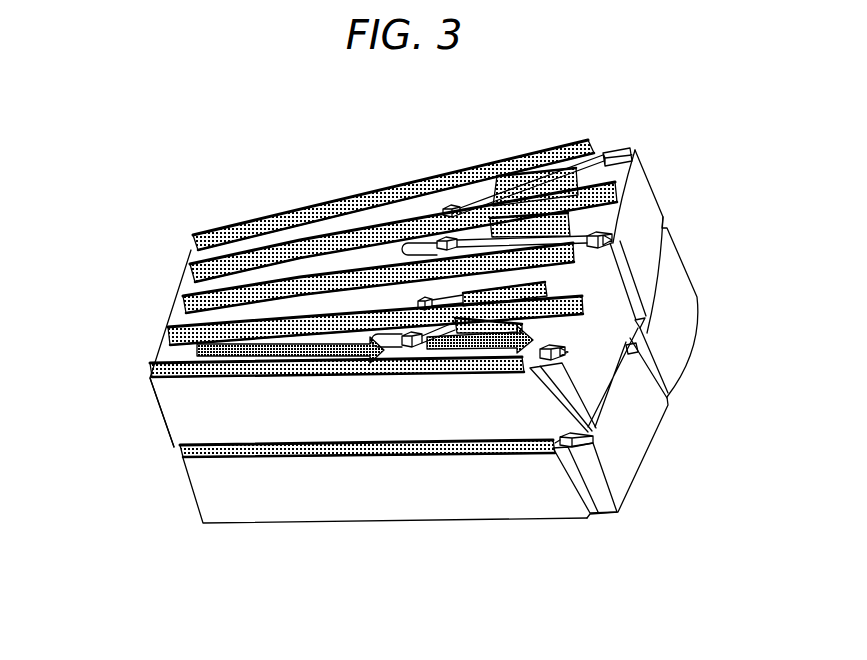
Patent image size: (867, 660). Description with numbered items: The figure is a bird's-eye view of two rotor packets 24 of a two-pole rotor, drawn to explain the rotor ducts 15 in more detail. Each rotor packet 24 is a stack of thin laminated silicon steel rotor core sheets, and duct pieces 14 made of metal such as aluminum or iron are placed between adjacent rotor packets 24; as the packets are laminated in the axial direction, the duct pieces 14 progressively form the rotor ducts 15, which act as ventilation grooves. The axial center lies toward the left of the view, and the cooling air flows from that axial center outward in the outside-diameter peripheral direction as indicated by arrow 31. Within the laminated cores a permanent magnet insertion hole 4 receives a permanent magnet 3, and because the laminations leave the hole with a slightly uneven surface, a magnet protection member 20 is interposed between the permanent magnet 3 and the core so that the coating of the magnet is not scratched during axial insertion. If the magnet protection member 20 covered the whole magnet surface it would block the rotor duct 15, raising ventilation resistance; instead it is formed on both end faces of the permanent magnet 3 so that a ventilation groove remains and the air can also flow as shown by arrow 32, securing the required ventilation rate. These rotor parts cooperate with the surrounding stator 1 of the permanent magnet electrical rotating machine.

The stator 1 is at (635, 150).
The duct piece 14 is at (457, 171).
The rotor duct 15 is at (652, 289).
The permanent magnet 3 is at (567, 328).
The magnet protection member 20 is at (543, 340).
The permanent magnet insertion hole 4 is at (537, 353).
The rotor packet 24 is at (212, 492).
The arrow 31 is at (293, 347).
The arrow 32 is at (440, 350).